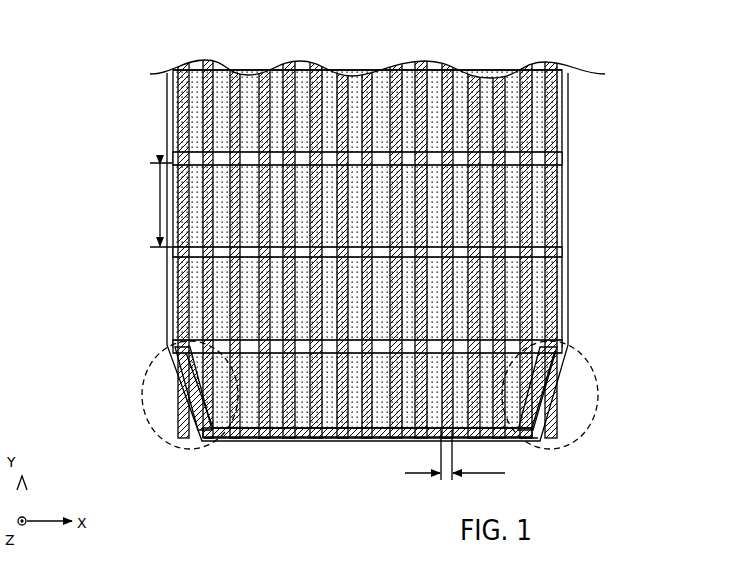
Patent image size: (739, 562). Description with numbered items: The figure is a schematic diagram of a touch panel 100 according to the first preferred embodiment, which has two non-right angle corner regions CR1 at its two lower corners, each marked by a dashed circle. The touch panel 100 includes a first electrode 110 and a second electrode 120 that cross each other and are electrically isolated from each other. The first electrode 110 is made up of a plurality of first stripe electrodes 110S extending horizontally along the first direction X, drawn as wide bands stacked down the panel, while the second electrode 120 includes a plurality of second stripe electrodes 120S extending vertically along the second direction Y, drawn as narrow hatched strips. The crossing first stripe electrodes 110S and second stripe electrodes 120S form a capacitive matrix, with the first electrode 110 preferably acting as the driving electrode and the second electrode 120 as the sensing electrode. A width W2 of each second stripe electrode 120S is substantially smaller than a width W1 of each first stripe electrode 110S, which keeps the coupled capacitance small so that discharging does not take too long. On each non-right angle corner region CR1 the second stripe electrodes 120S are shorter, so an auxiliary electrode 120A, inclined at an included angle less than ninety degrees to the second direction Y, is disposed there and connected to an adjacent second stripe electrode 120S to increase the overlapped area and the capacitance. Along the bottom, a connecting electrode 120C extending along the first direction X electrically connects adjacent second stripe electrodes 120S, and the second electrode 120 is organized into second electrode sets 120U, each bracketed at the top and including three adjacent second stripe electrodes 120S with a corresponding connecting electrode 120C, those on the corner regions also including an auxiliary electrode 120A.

The touch panel 100 is at (634, 78).
The first electrode 110 is at (417, 250).
The first stripe electrodes 110S is at (568, 116).
The second electrode 120 is at (304, 282).
The second electrode sets 120U is at (241, 58).
The second stripe electrodes 120S is at (320, 523).
The auxiliary electrode 120A is at (188, 392).
The connecting electrode 120C is at (226, 434).
The non-right angle corner region CR1 is at (148, 448).
The width of first stripe electrode W1 is at (151, 205).
The width of second stripe electrode W2 is at (455, 455).